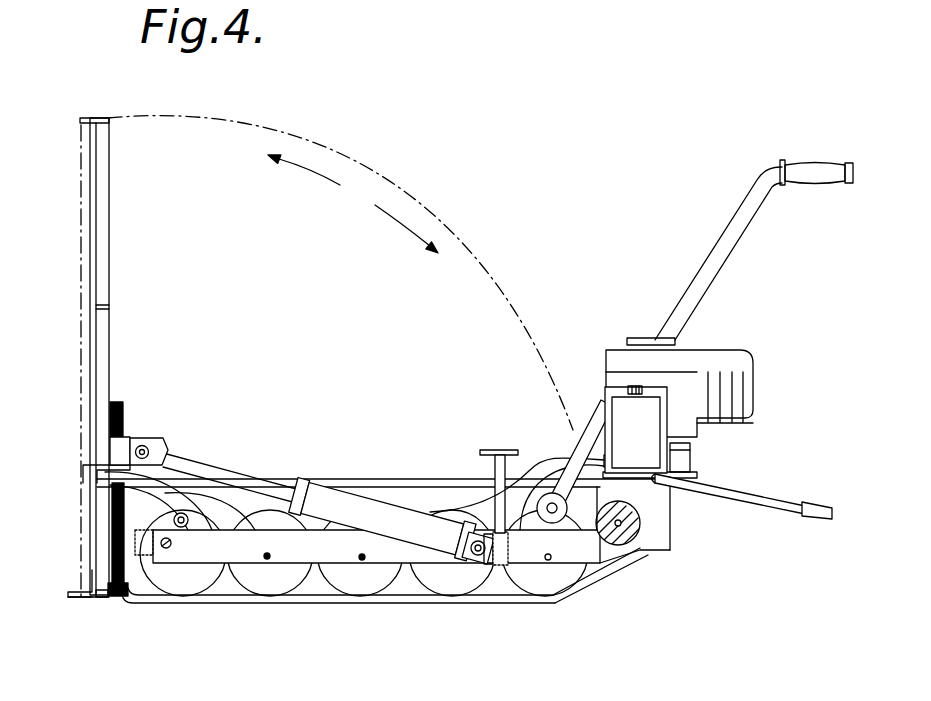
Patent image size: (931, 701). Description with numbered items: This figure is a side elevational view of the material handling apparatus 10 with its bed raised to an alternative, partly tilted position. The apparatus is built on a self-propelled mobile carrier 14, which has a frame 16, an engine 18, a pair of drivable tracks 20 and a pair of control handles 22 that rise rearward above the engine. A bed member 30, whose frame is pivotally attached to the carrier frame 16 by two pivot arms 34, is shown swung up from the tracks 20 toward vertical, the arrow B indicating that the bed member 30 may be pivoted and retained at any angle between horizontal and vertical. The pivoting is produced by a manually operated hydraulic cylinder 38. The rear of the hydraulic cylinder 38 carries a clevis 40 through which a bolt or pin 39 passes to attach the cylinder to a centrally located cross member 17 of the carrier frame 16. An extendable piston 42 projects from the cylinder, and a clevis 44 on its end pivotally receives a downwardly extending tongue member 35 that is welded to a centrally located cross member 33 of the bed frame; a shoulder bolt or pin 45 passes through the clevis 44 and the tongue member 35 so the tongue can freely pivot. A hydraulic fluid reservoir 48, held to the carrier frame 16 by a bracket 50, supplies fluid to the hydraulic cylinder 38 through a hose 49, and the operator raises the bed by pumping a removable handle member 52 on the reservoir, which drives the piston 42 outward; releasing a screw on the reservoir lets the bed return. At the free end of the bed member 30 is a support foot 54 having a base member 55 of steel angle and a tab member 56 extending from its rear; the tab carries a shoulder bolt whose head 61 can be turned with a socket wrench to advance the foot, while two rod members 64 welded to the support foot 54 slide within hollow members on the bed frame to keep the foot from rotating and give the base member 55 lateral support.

The material handling apparatus 10 is at (600, 596).
The self-propelled mobile carrier 14 is at (705, 443).
The carrier frame 16 is at (661, 531).
The cross member 17 is at (505, 565).
The engine 18 is at (708, 358).
The drivable tracks 20 is at (230, 605).
The control handles 22 is at (817, 162).
The bed member 30 is at (118, 265).
The cross member 33 is at (118, 447).
The pivot arms 34 is at (135, 490).
The tongue member 35 is at (143, 442).
The hydraulic cylinder 38 is at (390, 518).
The bolt or pin 39 is at (486, 565).
The clevis 40 is at (471, 562).
The extendable piston 42 is at (208, 468).
The clevis 44 is at (163, 452).
The shoulder bolt or pin 45 is at (148, 447).
The hydraulic fluid reservoir 48 is at (647, 452).
The hose 49 is at (550, 495).
The bracket 50 is at (603, 390).
The handle member 52 is at (737, 497).
The support foot 54 is at (72, 612).
The base member 55 is at (78, 582).
The tab member 56 is at (100, 597).
The head 61 is at (118, 596).
The rod members 64 is at (100, 530).
The arrow B is at (340, 273).